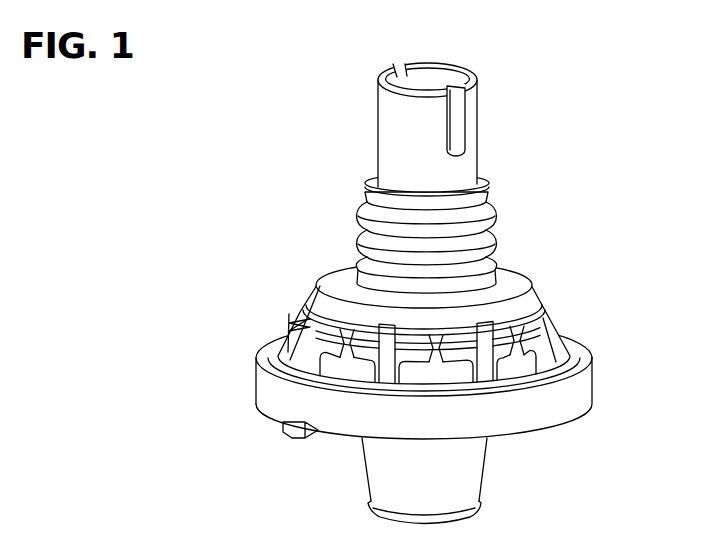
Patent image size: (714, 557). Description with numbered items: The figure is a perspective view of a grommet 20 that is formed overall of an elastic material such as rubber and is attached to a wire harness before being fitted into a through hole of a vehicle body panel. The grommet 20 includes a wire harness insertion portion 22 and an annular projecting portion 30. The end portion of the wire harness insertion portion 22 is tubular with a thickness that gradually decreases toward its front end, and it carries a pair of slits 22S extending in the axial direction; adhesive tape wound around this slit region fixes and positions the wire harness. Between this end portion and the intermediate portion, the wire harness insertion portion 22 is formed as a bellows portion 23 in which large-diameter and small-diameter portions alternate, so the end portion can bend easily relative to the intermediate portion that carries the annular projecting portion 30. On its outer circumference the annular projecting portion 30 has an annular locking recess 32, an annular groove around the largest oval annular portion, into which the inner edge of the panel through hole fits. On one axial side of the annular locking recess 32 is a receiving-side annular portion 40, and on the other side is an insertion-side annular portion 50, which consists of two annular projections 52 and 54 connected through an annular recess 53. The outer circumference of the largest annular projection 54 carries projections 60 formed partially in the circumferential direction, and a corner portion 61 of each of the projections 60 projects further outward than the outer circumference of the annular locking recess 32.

The grommet 20 is at (486, 165).
The wire harness insertion portion 22 is at (469, 158).
The slits 22S is at (400, 76).
The bellows portion 23 is at (500, 212).
The annular projecting portion 30 is at (470, 422).
The annular locking recess 32 is at (594, 398).
The receiving-side annular portion 40 is at (578, 407).
The insertion-side annular portion 50 is at (422, 370).
The annular projection 52 is at (298, 308).
The annular recess 53 is at (292, 320).
The annular projection 54 is at (336, 345).
The projections 60 is at (317, 322).
The corner portion 61 is at (578, 364).